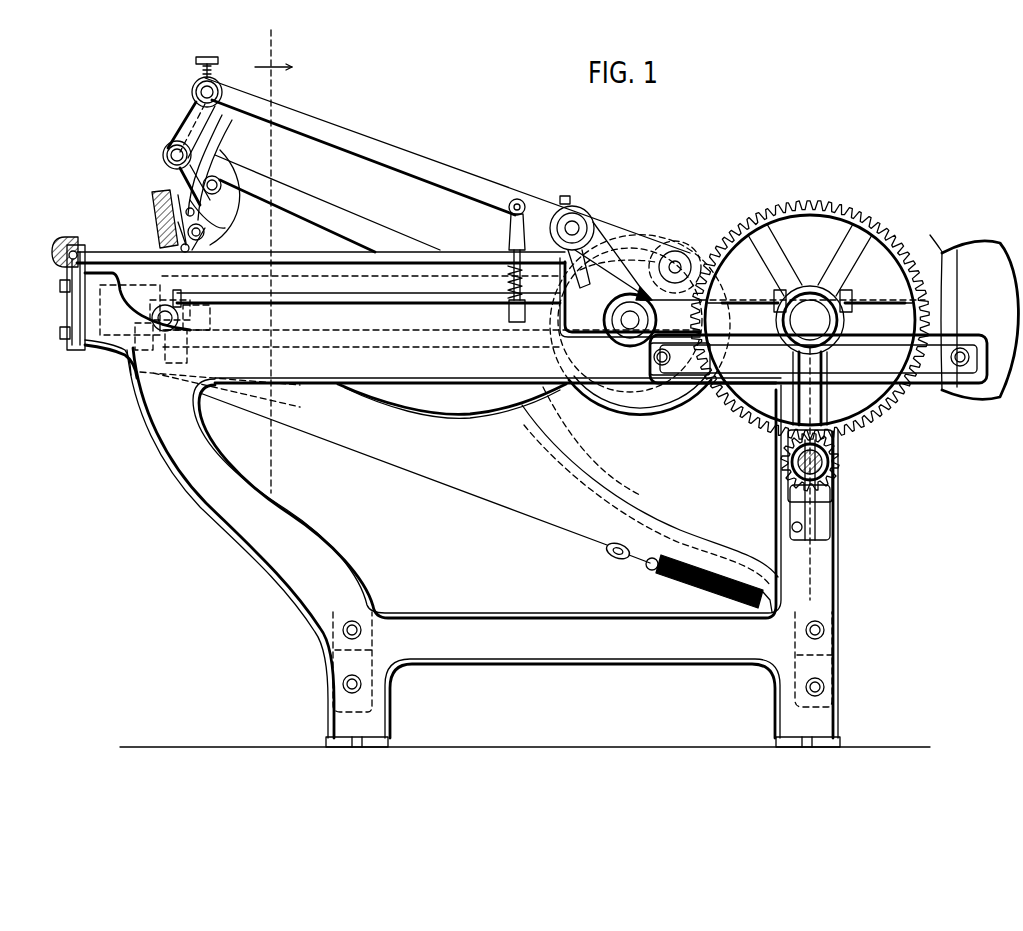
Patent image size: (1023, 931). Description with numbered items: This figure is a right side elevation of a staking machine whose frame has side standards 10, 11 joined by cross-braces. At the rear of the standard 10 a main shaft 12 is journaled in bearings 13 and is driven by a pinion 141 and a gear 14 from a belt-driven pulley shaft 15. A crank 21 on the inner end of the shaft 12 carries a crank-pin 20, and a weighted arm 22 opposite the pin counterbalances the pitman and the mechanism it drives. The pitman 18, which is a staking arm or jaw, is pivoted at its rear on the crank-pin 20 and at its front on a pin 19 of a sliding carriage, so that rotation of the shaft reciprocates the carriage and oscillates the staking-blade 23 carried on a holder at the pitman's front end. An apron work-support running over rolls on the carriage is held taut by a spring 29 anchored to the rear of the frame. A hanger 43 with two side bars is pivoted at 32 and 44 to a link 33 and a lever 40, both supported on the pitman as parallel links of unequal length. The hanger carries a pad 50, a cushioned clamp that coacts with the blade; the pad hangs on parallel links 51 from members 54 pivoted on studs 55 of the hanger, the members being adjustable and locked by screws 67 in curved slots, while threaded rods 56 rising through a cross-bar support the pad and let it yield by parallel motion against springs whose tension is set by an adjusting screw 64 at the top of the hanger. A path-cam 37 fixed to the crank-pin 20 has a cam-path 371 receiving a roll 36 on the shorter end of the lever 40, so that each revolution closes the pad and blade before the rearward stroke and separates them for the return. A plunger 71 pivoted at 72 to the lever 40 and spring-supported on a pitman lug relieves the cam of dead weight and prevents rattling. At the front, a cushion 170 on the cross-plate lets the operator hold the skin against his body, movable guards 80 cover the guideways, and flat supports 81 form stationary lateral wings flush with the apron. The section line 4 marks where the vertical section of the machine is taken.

The side standard 10 is at (437, 612).
The side standard 11 is at (729, 548).
The main shaft 12 is at (810, 305).
The bearings 13 is at (805, 365).
The gear 14 is at (920, 384).
The pulley shaft 15 is at (832, 478).
The pinion 141 is at (838, 465).
The pitman 18 is at (470, 408).
The pin 19 is at (140, 352).
The crank-pin 20 is at (632, 312).
The crank 21 is at (692, 300).
The weighted arm 22 is at (952, 255).
The staking-blade 23 is at (113, 250).
The spring 29 is at (712, 598).
The pivot 32 is at (163, 156).
The link 33 is at (320, 204).
The roll 36 is at (672, 252).
The path-cam 37 is at (652, 414).
The cam-path 371 is at (658, 388).
The lever 40 is at (316, 126).
The hanger 43 is at (182, 122).
The pivot 44 is at (192, 92).
The pad 50 is at (153, 203).
The parallel links 51 is at (193, 208).
The members 54 is at (222, 204).
The studs 55 is at (206, 235).
The threaded rods 56 is at (185, 187).
The adjusting screw 64 is at (197, 59).
The screws 67 is at (216, 180).
The plunger 71 is at (505, 231).
The pivot 72 is at (520, 200).
The guards 80 is at (333, 380).
The flat supports 81 is at (395, 250).
The cushion 170 is at (52, 256).
The section line 4 is at (273, 253).